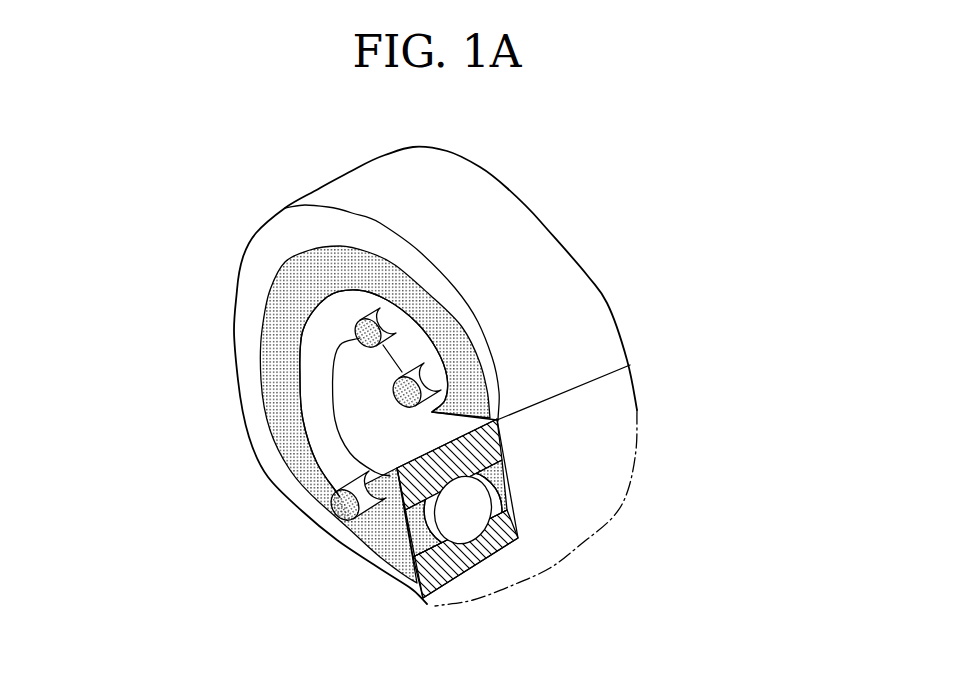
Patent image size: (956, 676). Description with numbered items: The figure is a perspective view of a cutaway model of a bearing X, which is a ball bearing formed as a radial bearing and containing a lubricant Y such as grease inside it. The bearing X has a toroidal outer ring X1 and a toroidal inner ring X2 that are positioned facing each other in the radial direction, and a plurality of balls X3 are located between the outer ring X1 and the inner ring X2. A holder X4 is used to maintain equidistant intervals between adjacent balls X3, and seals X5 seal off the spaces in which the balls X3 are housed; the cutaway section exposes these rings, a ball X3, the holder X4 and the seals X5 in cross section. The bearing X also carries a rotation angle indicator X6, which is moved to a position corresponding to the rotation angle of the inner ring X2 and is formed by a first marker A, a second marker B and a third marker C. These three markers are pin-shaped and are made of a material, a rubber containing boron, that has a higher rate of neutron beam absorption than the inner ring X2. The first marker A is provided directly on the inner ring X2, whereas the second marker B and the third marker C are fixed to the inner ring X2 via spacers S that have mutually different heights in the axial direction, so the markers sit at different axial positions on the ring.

The bearing X is at (617, 185).
The outer ring X1 is at (578, 380).
The inner ring X2 is at (497, 432).
The balls X3 is at (470, 522).
The holder X4 is at (430, 522).
The seals X5 is at (505, 480).
The rotation angle indicator X6 is at (313, 363).
The lubricant Y is at (447, 535).
The spacers S is at (474, 399).
The first marker A is at (395, 322).
The second marker B is at (332, 503).
The third marker C is at (435, 370).